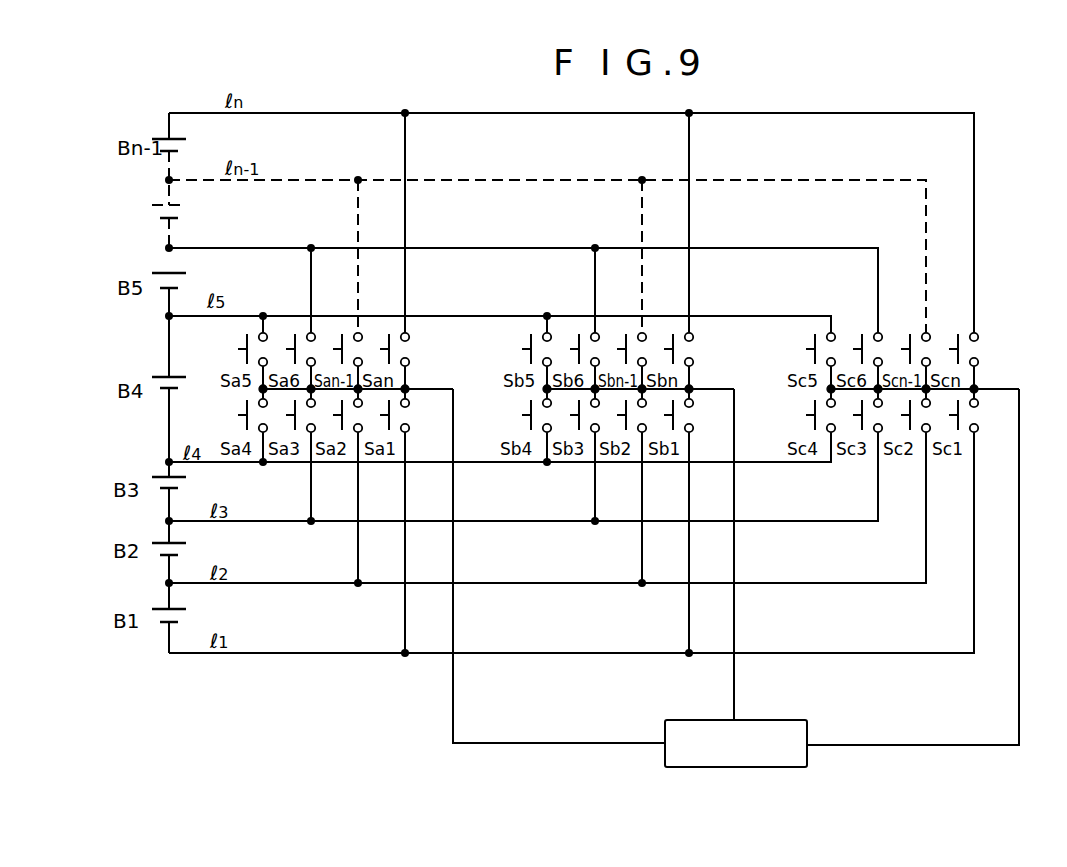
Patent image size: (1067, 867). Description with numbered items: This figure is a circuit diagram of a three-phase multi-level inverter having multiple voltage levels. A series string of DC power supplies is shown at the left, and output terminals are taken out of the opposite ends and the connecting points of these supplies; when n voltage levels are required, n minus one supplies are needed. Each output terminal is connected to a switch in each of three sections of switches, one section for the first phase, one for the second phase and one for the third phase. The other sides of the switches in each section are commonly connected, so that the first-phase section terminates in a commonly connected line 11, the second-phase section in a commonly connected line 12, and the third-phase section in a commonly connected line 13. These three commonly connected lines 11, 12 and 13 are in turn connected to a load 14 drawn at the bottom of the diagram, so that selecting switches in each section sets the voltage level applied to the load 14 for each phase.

The commonly connected line 11 is at (455, 699).
The commonly connected line 12 is at (734, 704).
The commonly connected line 13 is at (1019, 705).
The load 14 is at (808, 758).